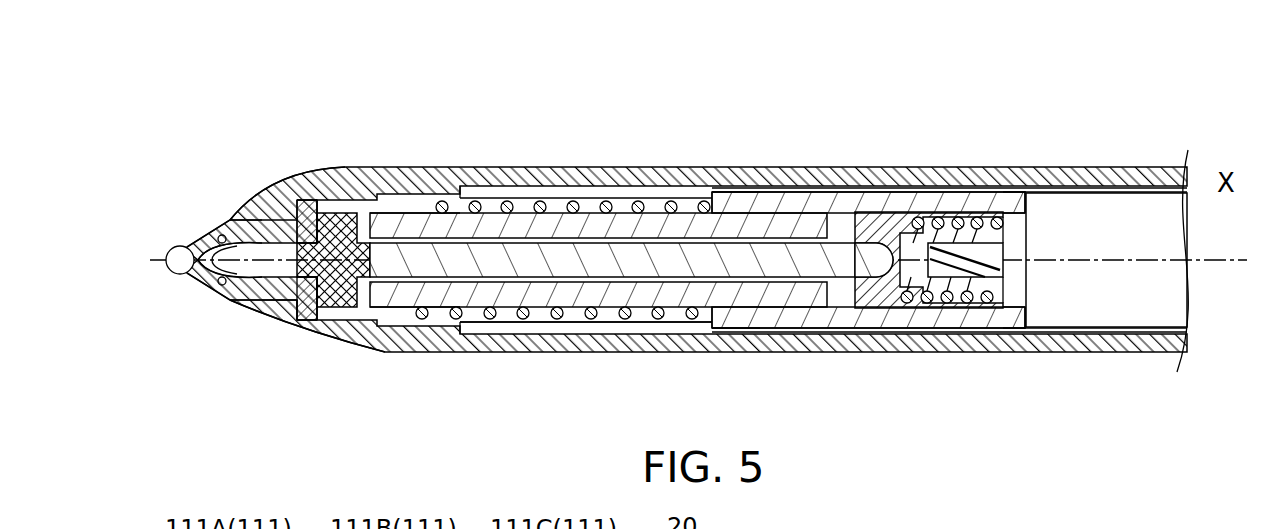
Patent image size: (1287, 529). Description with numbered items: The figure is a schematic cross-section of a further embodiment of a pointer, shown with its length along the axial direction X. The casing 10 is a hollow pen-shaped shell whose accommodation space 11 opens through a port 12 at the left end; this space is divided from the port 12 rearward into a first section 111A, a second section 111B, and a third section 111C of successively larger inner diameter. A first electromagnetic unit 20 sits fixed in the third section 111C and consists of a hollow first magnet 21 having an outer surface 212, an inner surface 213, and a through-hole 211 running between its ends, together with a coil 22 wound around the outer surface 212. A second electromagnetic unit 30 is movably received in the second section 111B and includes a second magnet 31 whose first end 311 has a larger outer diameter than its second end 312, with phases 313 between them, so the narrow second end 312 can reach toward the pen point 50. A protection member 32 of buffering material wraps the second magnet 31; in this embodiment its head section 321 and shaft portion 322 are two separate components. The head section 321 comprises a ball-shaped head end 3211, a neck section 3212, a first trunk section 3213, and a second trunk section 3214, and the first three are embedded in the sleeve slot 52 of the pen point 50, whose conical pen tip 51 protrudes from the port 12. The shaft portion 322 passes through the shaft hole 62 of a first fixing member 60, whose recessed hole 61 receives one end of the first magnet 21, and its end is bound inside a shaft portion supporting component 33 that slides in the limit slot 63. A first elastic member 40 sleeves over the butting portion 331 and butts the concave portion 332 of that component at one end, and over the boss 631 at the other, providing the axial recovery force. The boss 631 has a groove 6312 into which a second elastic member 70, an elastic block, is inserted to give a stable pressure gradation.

The casing 10 is at (1072, 165).
The port 12 is at (265, 205).
The accommodation space 11 is at (527, 198).
The first section 111A is at (270, 212).
The second section 111B is at (300, 205).
The third section 111C is at (438, 212).
The first electromagnetic unit 20 is at (730, 104).
The first magnet 21 is at (712, 192).
The coil 22 is at (607, 198).
The through-hole 211 is at (578, 285).
The outer surface 212 is at (498, 318).
The inner surface 213 is at (668, 300).
The second electromagnetic unit 30 is at (233, 234).
The second magnet 31 is at (330, 220).
The first end 311 is at (418, 212).
The second end 312 is at (228, 226).
The phases 313 is at (288, 210).
The protection member 32 is at (398, 423).
The head section 321 is at (332, 378).
The head end 3211 is at (195, 285).
The neck section 3212 is at (228, 292).
The first trunk section 3213 is at (266, 288).
The second trunk section 3214 is at (300, 305).
The shaft portion 322 is at (400, 322).
The pen point 50 is at (172, 270).
The pen tip 51 is at (183, 262).
The sleeve slot 52 is at (200, 252).
The first elastic member 40 is at (998, 190).
The first fixing member 60 is at (965, 212).
The recessed hole 61 is at (770, 212).
The shaft hole 62 is at (832, 212).
The limit slot 63 is at (880, 193).
The boss 631 is at (1008, 282).
The groove 6312 is at (1028, 240).
The second elastic member 70 is at (975, 277).
The shaft portion supporting component 33 is at (983, 407).
The butting portion 331 is at (940, 282).
The concave portion 332 is at (905, 302).